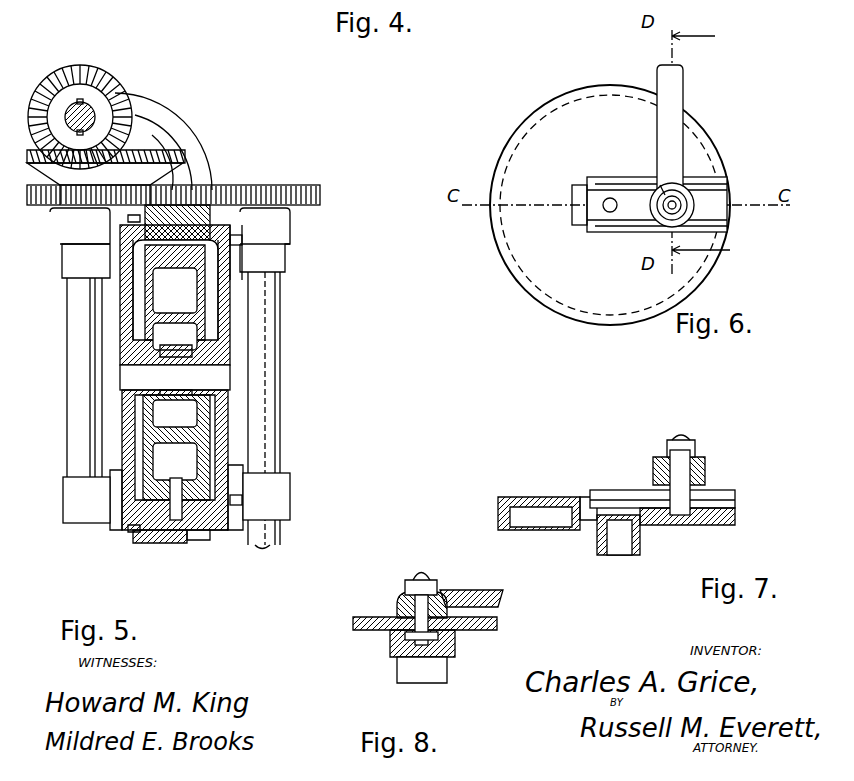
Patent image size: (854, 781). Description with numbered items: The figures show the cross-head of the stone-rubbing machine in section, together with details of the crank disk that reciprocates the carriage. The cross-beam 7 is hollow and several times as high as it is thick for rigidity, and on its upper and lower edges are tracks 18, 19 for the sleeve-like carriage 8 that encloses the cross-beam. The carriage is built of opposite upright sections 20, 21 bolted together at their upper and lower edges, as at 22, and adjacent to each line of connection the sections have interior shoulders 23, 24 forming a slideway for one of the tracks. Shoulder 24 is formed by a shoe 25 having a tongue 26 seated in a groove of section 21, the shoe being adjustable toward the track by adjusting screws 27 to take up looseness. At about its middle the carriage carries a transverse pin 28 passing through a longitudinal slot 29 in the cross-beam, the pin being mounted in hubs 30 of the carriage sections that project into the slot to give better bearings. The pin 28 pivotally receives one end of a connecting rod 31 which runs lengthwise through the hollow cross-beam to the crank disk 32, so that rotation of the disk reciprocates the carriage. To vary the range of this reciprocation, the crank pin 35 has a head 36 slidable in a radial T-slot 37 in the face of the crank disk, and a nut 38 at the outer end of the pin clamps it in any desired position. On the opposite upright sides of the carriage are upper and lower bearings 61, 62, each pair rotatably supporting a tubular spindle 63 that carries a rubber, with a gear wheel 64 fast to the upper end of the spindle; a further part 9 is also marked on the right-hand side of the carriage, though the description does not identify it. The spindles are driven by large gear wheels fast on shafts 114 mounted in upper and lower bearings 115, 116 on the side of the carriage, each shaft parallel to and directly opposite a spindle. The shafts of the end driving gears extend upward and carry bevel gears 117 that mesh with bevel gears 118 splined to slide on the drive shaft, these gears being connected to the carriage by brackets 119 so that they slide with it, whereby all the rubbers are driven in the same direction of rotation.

In FIG. 5, the cross-beam 7 is at (150, 485).
In FIG. 5, the carriage 8 is at (122, 400).
In FIG. 5, the rod 9 is at (278, 350).
In FIG. 5, the track 18 is at (195, 228).
In FIG. 5, the track 19 is at (165, 543).
In FIG. 5, the carriage section 20 is at (122, 318).
In FIG. 5, the carriage section 21 is at (228, 313).
In FIG. 5, the bolt connections 22 is at (128, 218).
In FIG. 5, the interior shoulder 23 is at (124, 265).
In FIG. 5, the interior shoulder 24 is at (262, 207).
In FIG. 5, the shoe 25 is at (200, 533).
In FIG. 5, the tongue 26 is at (220, 528).
In FIG. 5, the adjusting screws 27 is at (242, 240).
In FIG. 5, the transverse pin 28 is at (175, 377).
In FIG. 5, the longitudinal slot 29 is at (200, 328).
In FIG. 5, the hubs 30 is at (232, 392).
In FIG. 5, the connecting rod 31 is at (176, 350).
In FIG. 6, the connecting rod 31 is at (683, 96).
In FIG. 7, the connecting rod 31 is at (662, 499).
In FIG. 8, the connecting rod 31 is at (504, 597).
In FIG. 6, the crank disk 32 is at (610, 205).
In FIG. 7, the crank disk 32 is at (505, 497).
In FIG. 8, the crank disk 32 is at (497, 624).
In FIG. 6, the crank pin 35 is at (690, 192).
In FIG. 7, the crank pin 35 is at (681, 465).
In FIG. 8, the crank pin 35 is at (397, 607).
In FIG. 7, the head 36 is at (680, 512).
In FIG. 8, the head 36 is at (410, 575).
In FIG. 7, the radial T-slot 37 is at (735, 510).
In FIG. 8, the radial T-slot 37 is at (452, 652).
In FIG. 6, the nut 38 is at (655, 186).
In FIG. 7, the nut 38 is at (665, 452).
In FIG. 5, the upper bearing 61 is at (270, 262).
In FIG. 5, the lower bearing 62 is at (276, 497).
In FIG. 5, the spindle 63 is at (270, 455).
In FIG. 5, the gear wheel 64 is at (318, 190).
In FIG. 5, the shaft 114 is at (74, 388).
In FIG. 5, the upper bearing 115 is at (80, 243).
In FIG. 5, the lower bearing 116 is at (86, 500).
In FIG. 5, the bevel gear 117 is at (165, 152).
In FIG. 5, the bevel gear 118 is at (95, 68).
In FIG. 5, the bracket 119 is at (147, 97).